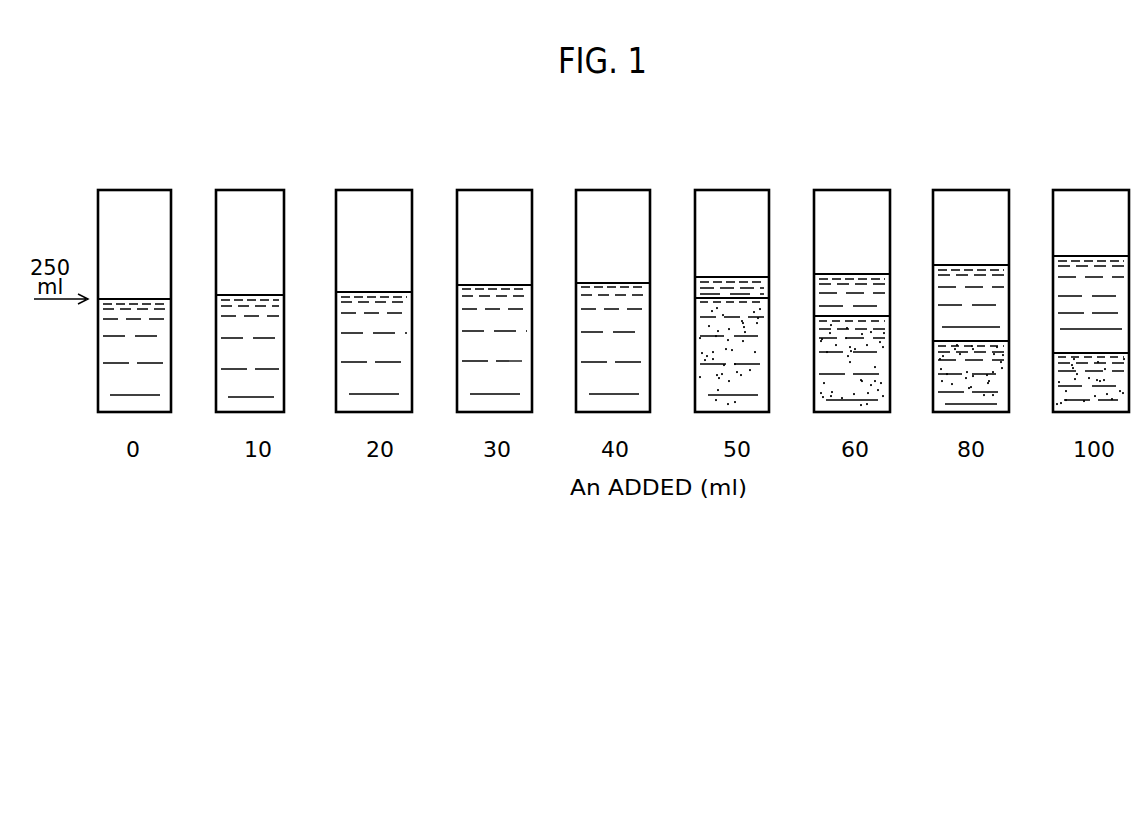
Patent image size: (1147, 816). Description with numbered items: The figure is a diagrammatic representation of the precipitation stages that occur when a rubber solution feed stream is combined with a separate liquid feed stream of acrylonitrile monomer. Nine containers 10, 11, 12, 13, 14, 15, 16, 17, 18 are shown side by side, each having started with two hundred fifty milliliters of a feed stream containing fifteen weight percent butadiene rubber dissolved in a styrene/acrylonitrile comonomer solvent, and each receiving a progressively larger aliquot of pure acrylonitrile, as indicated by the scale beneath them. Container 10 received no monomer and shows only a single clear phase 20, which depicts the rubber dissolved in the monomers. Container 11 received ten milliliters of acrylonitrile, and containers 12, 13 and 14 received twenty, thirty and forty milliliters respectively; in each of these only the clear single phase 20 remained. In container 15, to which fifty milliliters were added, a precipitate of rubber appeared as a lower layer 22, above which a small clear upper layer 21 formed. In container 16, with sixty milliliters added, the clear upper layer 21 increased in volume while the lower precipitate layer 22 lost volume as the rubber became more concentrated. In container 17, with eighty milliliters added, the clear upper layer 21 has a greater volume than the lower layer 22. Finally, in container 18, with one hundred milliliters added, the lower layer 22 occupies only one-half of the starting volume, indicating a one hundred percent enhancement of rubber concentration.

The container 10 is at (136, 190).
The container 11 is at (258, 190).
The container 12 is at (374, 190).
The container 13 is at (492, 190).
The container 14 is at (614, 190).
The container 15 is at (732, 190).
The container 16 is at (850, 190).
The container 17 is at (963, 190).
The container 18 is at (1090, 190).
The clear phase 20 is at (108, 382).
The clear upper layer 21 is at (706, 288).
The lower precipitate layer 22 is at (714, 377).